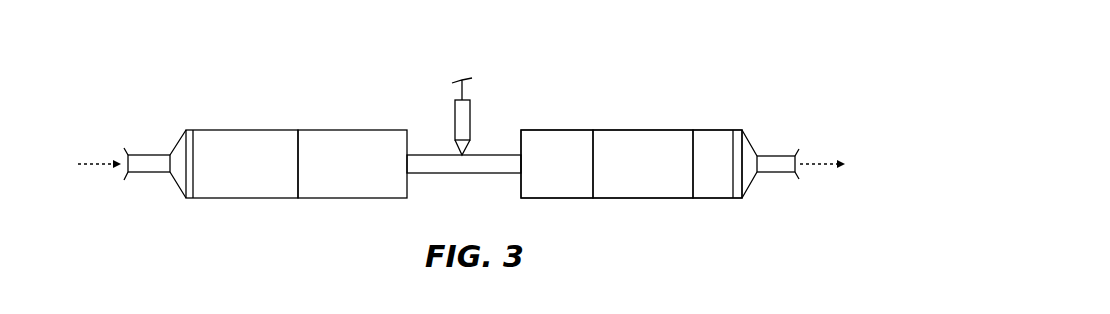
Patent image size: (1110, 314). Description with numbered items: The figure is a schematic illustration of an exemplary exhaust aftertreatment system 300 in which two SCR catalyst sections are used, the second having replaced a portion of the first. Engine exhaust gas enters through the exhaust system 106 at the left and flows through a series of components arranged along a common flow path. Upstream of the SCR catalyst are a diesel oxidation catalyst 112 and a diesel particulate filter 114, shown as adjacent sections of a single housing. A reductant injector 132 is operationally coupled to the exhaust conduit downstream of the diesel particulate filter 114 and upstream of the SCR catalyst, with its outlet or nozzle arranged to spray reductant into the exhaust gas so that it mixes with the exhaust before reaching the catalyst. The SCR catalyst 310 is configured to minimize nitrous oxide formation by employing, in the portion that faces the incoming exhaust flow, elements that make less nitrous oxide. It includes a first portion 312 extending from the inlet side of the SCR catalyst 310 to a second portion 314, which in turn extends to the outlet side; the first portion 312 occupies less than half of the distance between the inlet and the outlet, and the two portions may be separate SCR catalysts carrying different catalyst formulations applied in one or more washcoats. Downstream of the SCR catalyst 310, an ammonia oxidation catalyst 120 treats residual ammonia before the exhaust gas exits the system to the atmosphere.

The exhaust aftertreatment system 300 is at (766, 57).
The exhaust system 106 is at (150, 154).
The diesel oxidation catalyst 112 is at (246, 128).
The diesel particulate filter 114 is at (353, 128).
The reductant injector 132 is at (455, 121).
The SCR catalyst 310 is at (590, 88).
The first portion 312 is at (556, 128).
The second portion 314 is at (645, 128).
The ammonia oxidation catalyst 120 is at (711, 128).